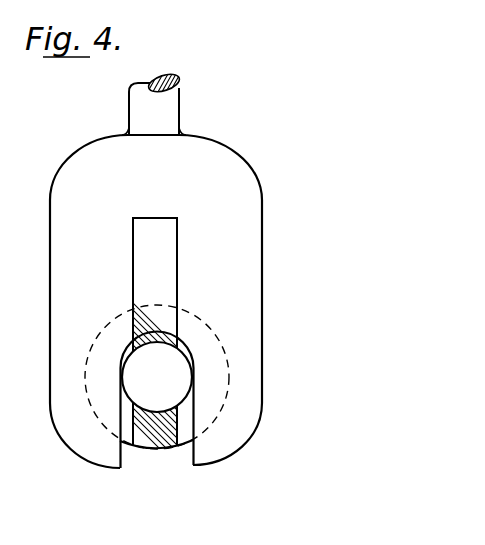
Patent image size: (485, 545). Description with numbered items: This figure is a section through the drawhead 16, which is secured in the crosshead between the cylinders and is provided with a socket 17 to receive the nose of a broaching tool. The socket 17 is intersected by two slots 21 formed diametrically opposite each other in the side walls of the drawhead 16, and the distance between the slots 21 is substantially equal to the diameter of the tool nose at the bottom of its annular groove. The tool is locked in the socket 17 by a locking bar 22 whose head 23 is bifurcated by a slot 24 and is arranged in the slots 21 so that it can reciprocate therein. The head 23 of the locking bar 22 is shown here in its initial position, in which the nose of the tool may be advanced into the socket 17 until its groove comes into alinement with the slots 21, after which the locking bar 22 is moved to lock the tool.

The drawhead 16 is at (157, 441).
The socket 17 is at (157, 377).
The slots 21 is at (130, 433).
The locking bar 22 is at (167, 107).
The head 23 is at (156, 301).
The slot 24 is at (158, 252).